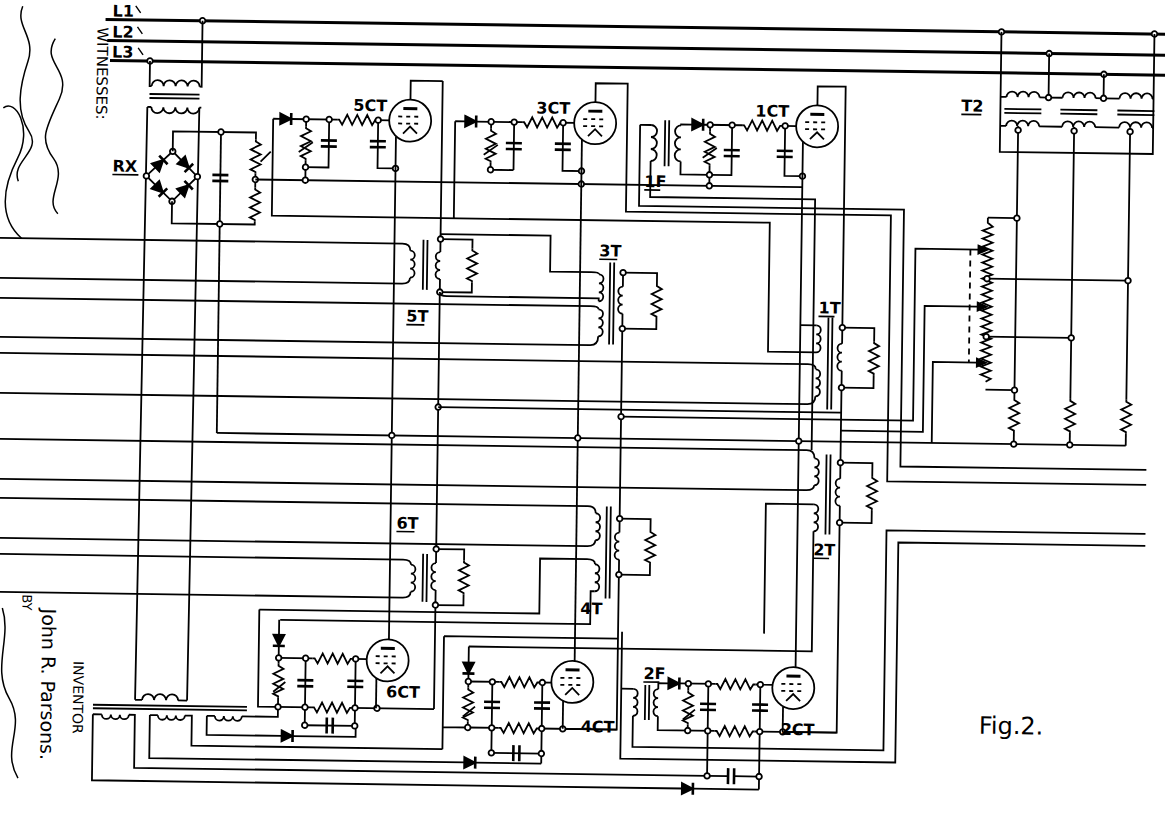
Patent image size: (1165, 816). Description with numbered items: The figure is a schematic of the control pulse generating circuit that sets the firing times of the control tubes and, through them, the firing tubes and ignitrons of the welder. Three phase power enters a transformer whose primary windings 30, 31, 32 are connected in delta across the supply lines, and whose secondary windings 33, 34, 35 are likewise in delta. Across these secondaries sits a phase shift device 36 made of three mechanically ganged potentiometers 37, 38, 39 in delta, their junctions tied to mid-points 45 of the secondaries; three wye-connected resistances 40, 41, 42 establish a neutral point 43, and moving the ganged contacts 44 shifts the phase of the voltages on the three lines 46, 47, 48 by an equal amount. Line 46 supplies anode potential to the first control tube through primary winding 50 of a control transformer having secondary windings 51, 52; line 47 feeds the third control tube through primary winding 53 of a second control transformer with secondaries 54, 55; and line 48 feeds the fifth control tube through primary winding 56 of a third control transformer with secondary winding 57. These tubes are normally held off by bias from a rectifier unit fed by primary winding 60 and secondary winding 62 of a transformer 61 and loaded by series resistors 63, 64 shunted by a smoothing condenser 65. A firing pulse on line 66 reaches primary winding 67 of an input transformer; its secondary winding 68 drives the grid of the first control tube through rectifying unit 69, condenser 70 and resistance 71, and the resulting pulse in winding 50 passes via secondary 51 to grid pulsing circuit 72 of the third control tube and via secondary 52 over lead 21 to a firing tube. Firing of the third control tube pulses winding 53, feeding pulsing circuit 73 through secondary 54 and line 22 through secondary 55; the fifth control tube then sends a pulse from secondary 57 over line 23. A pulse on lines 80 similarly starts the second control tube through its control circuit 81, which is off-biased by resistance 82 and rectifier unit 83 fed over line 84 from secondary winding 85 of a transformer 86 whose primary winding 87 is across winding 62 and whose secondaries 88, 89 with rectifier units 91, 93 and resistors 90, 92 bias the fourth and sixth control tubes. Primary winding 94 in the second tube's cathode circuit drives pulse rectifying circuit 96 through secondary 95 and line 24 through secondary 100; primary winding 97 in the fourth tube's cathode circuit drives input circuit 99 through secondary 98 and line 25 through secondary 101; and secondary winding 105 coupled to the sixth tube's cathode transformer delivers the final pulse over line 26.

The lead 21 is at (13, 357).
The line 22 is at (13, 302).
The line 23 is at (13, 242).
The line 24 is at (13, 443).
The line 25 is at (13, 502).
The line 26 is at (13, 558).
The primary winding 30 is at (1015, 83).
The primary winding 31 is at (1071, 83).
The primary winding 32 is at (1124, 83).
The secondary winding 33 is at (1004, 115).
The secondary winding 34 is at (1068, 116).
The secondary winding 35 is at (1124, 116).
The phase shift device 36 is at (970, 203).
The potentiometer 37 is at (984, 225).
The potentiometer 38 is at (976, 287).
The potentiometer 39 is at (976, 376).
The resistance 40 is at (1021, 403).
The resistance 41 is at (1076, 403).
The resistance 42 is at (1132, 403).
The neutral point 43 is at (1016, 437).
The movable contact 44 is at (962, 316).
The mid-point 45 is at (1133, 136).
The line 46 is at (955, 348).
The line 47 is at (926, 294).
The line 48 is at (926, 244).
The primary winding 50 is at (860, 360).
The secondary winding 51 is at (804, 329).
The secondary winding 52 is at (808, 378).
The primary winding 53 is at (642, 303).
The secondary winding 54 is at (592, 276).
The secondary winding 55 is at (594, 321).
The primary winding 56 is at (459, 266).
The secondary winding 57 is at (395, 260).
The primary winding 60 is at (200, 86).
The transformer 61 is at (140, 105).
The secondary winding 62 is at (200, 109).
The resistor 63 is at (242, 204).
The resistor 64 is at (247, 163).
The smoothing condenser 65 is at (212, 282).
The line 66 is at (1148, 471).
The primary winding 67 is at (723, 274).
The secondary winding 68 is at (686, 136).
The rectifying unit 69 is at (701, 116).
The condenser 70 is at (736, 149).
The resistance 71 is at (701, 155).
The grid pulsing circuit 72 is at (489, 145).
The pulsing circuit 73 is at (295, 149).
The lines 80 is at (1138, 533).
The control circuit 81 is at (730, 676).
The resistance 82 is at (752, 724).
The rectifier unit 83 is at (692, 772).
The line 84 is at (610, 774).
The secondary winding 85 is at (400, 751).
The transformer 86 is at (122, 693).
The primary winding 87 is at (174, 684).
The secondary winding 88 is at (307, 738).
The secondary winding 89 is at (238, 700).
The resistor 90 is at (536, 724).
The rectifier unit 91 is at (475, 727).
The bias resistance 92 is at (348, 706).
The rectifier unit 93 is at (285, 706).
The primary winding 94 is at (859, 494).
The secondary winding 95 is at (808, 514).
The pulse rectifying circuit 96 is at (506, 666).
The primary winding 97 is at (637, 550).
The secondary winding 98 is at (584, 567).
The input circuit 99 is at (313, 646).
The secondary winding 100 is at (810, 463).
The secondary winding 101 is at (593, 512).
The secondary winding 105 is at (386, 568).